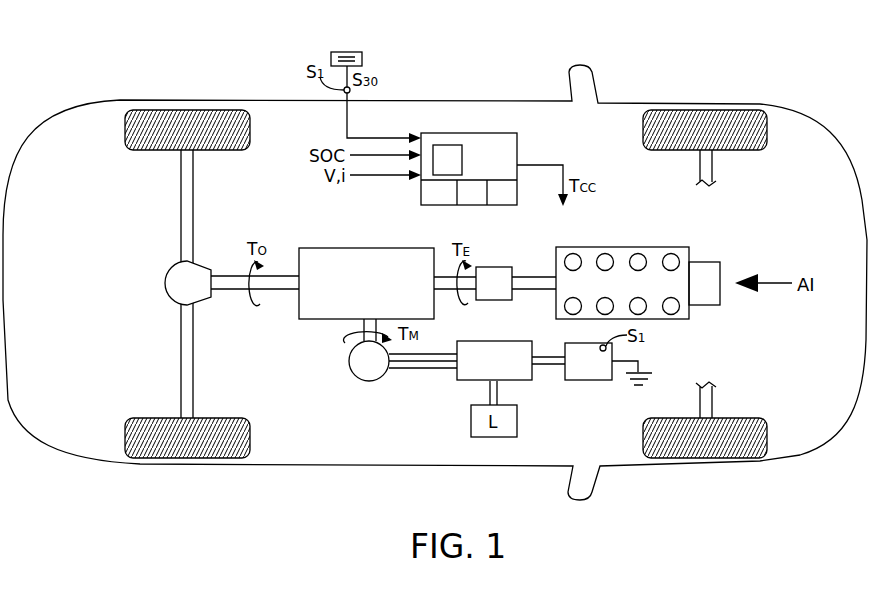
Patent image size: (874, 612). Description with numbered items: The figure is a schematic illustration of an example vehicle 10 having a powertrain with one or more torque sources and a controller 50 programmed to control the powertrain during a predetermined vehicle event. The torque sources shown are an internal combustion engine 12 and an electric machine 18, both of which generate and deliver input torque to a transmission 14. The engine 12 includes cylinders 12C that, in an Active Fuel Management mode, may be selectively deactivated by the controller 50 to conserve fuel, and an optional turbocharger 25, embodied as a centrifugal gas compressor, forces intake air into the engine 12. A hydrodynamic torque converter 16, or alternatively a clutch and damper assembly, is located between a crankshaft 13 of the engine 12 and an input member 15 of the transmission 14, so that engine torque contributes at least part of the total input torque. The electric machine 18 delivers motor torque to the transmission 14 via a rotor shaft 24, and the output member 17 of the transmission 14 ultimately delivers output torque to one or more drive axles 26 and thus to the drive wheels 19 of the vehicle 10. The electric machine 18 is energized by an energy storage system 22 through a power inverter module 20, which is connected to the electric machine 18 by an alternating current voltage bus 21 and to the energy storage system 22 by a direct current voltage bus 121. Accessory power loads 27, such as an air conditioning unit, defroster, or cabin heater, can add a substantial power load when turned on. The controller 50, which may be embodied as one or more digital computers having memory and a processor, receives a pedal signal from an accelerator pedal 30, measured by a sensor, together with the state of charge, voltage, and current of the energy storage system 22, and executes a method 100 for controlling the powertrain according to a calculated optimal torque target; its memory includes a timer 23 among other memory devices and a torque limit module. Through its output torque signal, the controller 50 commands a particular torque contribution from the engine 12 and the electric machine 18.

The vehicle 10 is at (783, 34).
The internal combustion engine 12 is at (622, 247).
The cylinders 12C is at (672, 254).
The crankshaft 13 is at (543, 276).
The transmission 14 is at (324, 316).
The input member 15 is at (447, 276).
The hydrodynamic torque converter 16 is at (491, 267).
The output member 17 is at (238, 291).
The electric machine 18 is at (369, 382).
The drive wheels 19 is at (183, 110).
The power inverter module 20 is at (500, 341).
The alternating current voltage bus 21 is at (427, 369).
The energy storage system 22 is at (588, 381).
The timer 23 is at (457, 171).
The rotor shaft 24 is at (356, 340).
The turbocharger 25 is at (720, 270).
The drive axles 26 is at (181, 208).
The accessory power loads 27 is at (483, 405).
The accelerator pedal 30 is at (345, 52).
The controller 50 is at (517, 150).
The method 100 is at (452, 203).
The direct current voltage bus 121 is at (557, 356).